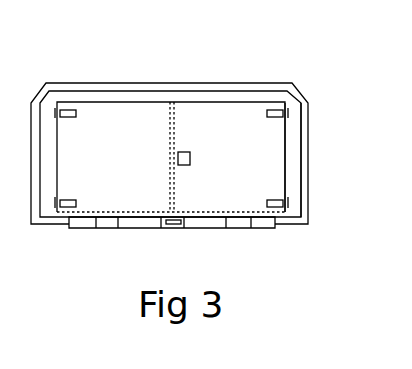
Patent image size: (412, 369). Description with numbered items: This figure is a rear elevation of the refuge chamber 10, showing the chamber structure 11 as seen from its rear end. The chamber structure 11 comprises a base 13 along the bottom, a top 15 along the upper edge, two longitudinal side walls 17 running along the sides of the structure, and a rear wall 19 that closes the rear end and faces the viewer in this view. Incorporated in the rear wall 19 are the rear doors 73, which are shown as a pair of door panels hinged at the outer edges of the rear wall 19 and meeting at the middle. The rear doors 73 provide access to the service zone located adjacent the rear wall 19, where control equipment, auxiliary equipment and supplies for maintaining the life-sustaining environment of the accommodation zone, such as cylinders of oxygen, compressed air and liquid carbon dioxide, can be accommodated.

The refuge chamber 10 is at (310, 78).
The chamber structure 11 is at (145, 83).
The base 13 is at (260, 223).
The top 15 is at (215, 83).
The longitudinal side walls 17 is at (308, 145).
The rear wall 19 is at (292, 168).
The rear doors 73 is at (257, 145).